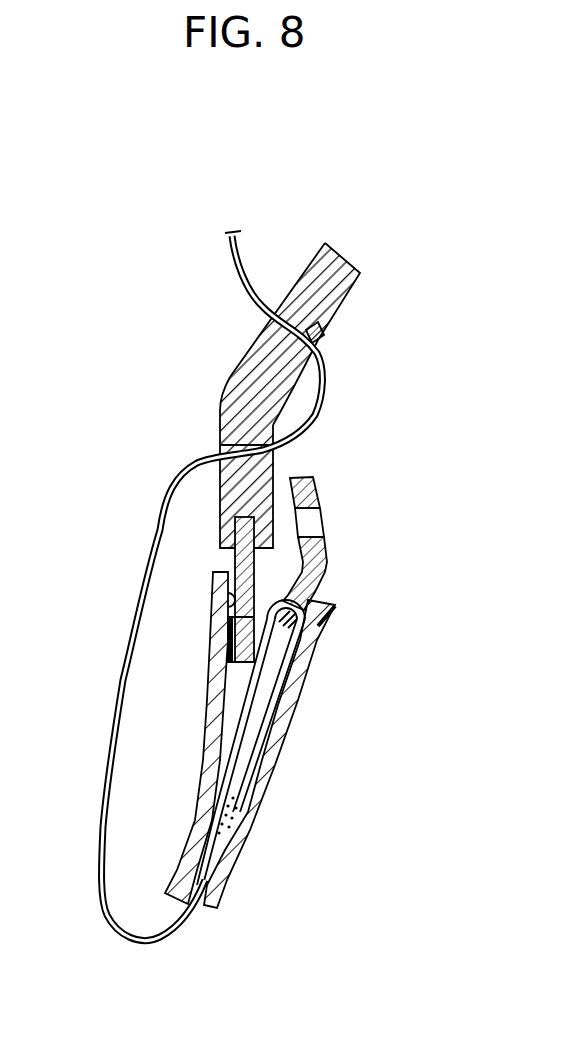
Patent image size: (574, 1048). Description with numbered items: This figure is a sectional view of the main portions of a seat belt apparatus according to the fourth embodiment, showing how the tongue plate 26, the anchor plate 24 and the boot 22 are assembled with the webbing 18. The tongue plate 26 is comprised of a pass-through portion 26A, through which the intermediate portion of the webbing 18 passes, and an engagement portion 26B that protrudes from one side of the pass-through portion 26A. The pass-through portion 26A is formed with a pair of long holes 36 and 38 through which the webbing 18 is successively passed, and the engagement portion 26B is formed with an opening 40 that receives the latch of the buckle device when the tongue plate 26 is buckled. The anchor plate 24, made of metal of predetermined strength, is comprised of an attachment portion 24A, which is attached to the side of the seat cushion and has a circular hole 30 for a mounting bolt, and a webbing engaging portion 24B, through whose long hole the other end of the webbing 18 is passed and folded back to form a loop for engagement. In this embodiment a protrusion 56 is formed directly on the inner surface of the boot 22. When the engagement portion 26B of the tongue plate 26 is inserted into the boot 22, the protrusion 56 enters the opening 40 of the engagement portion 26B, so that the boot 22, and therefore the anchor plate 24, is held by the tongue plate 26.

The webbing 18 is at (232, 256).
The boot 22 is at (267, 730).
The anchor plate 24 is at (314, 478).
The attachment portion 24A is at (316, 491).
The webbing engaging portion 24B is at (326, 574).
The tongue plate 26 is at (346, 250).
The pass-through portion 26A is at (230, 388).
The engagement portion 26B is at (233, 558).
The circular hole 30 is at (326, 521).
The long hole 36 is at (318, 342).
The long hole 38 is at (220, 448).
The opening 40 is at (227, 595).
The protrusion 56 is at (207, 662).